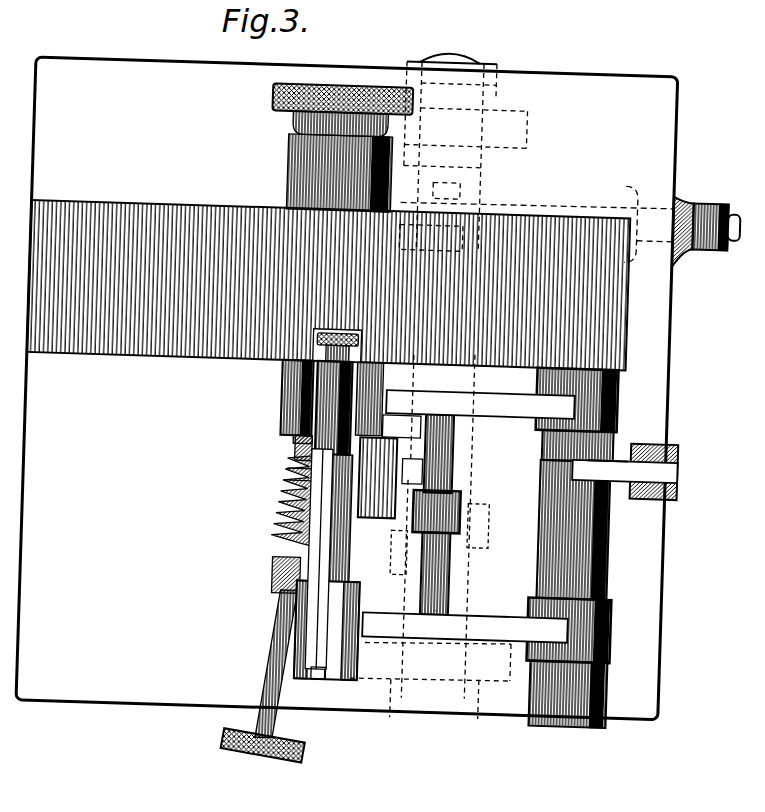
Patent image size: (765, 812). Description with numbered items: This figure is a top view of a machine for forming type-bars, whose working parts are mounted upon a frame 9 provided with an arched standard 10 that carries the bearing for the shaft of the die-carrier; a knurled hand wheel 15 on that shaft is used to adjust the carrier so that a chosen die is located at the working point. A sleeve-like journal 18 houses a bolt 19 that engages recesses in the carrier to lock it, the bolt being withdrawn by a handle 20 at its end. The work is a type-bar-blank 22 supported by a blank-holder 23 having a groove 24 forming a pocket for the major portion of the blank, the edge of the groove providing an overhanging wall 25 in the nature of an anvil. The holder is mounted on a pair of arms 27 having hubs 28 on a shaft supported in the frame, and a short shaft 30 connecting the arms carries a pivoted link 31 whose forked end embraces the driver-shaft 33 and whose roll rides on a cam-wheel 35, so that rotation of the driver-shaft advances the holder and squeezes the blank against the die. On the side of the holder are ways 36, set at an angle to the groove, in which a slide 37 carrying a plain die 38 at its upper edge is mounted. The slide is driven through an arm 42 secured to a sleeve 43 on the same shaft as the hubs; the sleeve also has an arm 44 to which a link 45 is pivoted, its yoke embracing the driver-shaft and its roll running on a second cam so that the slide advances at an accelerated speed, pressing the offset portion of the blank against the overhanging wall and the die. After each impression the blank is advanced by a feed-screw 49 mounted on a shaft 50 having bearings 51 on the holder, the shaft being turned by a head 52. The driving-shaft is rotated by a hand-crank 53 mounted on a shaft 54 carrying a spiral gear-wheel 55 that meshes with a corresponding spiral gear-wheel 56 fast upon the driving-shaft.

The frame 9 is at (138, 70).
The arched standard 10 is at (211, 204).
The knurled hand wheel 15 is at (275, 97).
The sleeve-like journal 18 is at (298, 446).
The bolt 19 is at (300, 372).
The handle 20 is at (315, 343).
The type-bar-blank 22 is at (325, 630).
The blank-holder 23 is at (300, 668).
The groove 24 is at (327, 680).
The overhanging wall 25 is at (321, 668).
The arms 27 is at (513, 408).
The hubs 28 is at (612, 391).
The short shaft 30 is at (453, 566).
The link 31 is at (461, 515).
The driver-shaft 33 is at (470, 705).
The cam-wheel 35 is at (487, 536).
The ways 36 is at (403, 427).
The slide 37 is at (290, 502).
The plain die 38 is at (290, 476).
The arm 42 is at (516, 434).
The sleeve 43 is at (607, 530).
The arm 44 is at (616, 460).
The link 45 is at (643, 450).
The feed-screw 49 is at (272, 542).
The shaft 50 is at (280, 600).
The bearings 51 is at (297, 442).
The head 52 is at (271, 757).
The hand-crank 53 is at (710, 203).
The shaft 54 is at (590, 201).
The spiral gear-wheel 55 is at (463, 188).
The spiral gear-wheel 56 is at (527, 201).